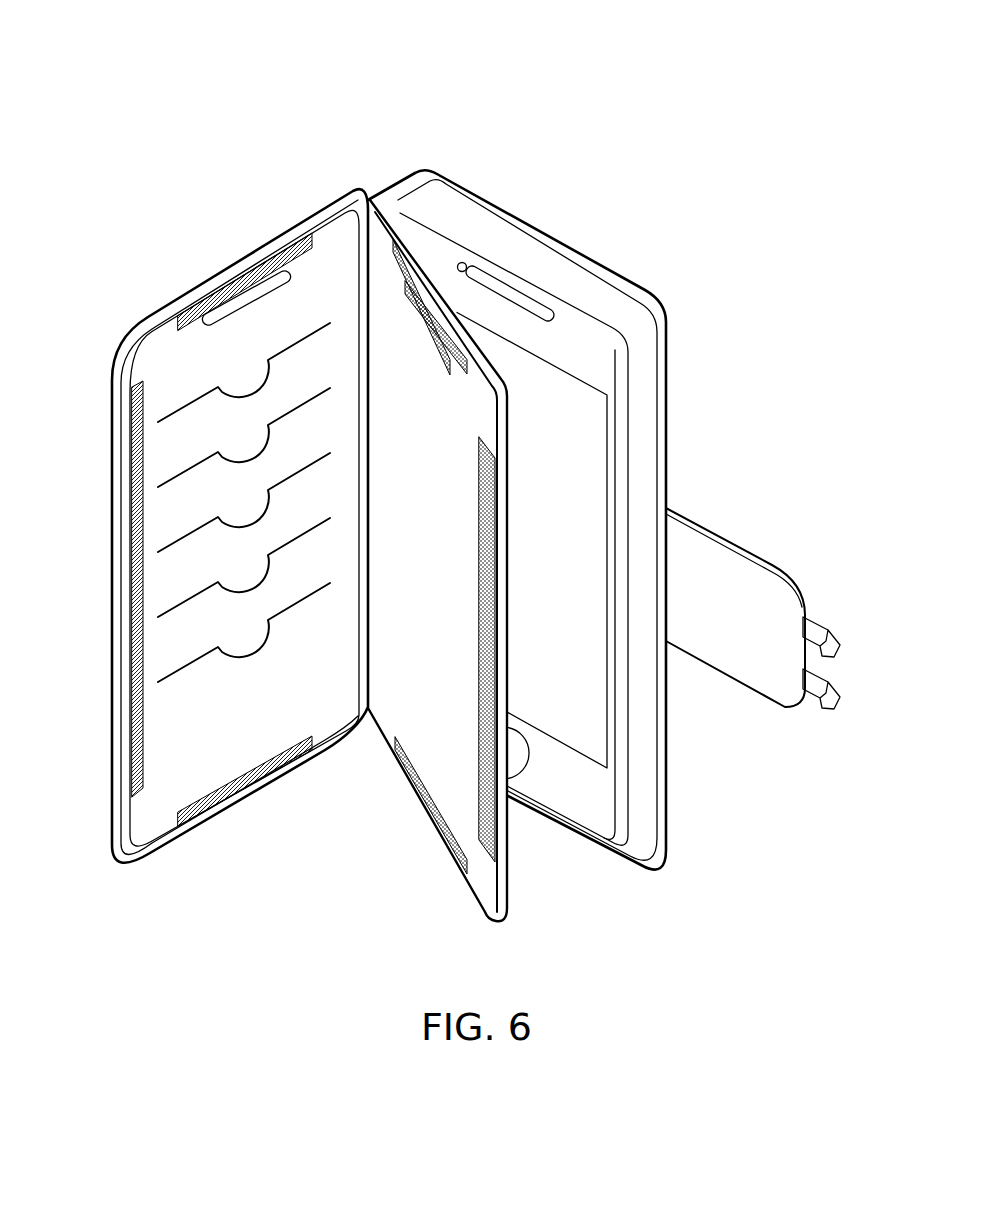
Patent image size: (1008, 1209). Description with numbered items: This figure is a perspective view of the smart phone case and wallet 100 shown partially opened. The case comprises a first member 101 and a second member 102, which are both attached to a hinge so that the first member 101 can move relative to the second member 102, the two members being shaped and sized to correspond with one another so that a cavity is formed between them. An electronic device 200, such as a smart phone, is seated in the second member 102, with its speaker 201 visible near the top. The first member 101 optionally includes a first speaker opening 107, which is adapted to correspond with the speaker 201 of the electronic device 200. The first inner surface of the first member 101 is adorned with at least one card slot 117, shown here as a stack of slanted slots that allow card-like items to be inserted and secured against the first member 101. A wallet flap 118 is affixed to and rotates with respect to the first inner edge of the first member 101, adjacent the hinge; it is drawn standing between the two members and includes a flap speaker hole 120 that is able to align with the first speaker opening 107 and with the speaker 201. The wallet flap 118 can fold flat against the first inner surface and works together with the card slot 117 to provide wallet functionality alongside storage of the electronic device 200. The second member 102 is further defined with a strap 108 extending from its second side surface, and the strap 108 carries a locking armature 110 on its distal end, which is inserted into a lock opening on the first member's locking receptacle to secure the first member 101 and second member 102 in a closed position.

The smart phone case and wallet 100 is at (586, 96).
The first member 101 is at (174, 296).
The second member 102 is at (466, 184).
The first speaker opening 107 is at (246, 290).
The strap 108 is at (752, 558).
The locking armature 110 is at (825, 627).
The card slot 117 is at (193, 403).
The wallet flap 118 is at (410, 207).
The flap speaker hole 120 is at (423, 313).
The electronic device 200 is at (576, 404).
The speaker 201 is at (522, 295).